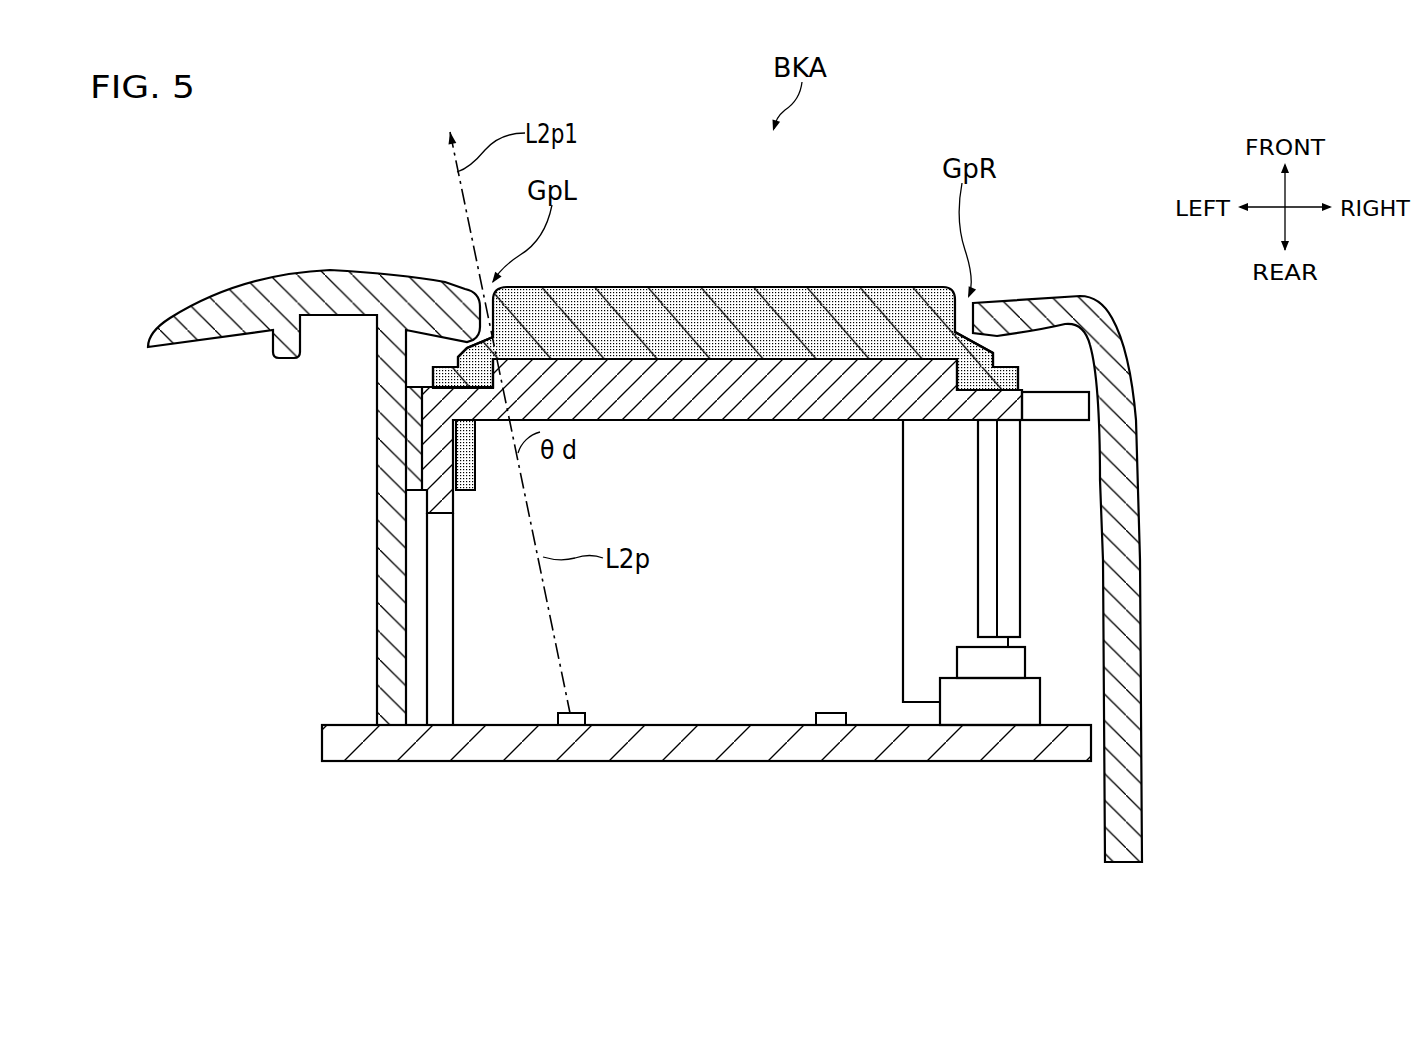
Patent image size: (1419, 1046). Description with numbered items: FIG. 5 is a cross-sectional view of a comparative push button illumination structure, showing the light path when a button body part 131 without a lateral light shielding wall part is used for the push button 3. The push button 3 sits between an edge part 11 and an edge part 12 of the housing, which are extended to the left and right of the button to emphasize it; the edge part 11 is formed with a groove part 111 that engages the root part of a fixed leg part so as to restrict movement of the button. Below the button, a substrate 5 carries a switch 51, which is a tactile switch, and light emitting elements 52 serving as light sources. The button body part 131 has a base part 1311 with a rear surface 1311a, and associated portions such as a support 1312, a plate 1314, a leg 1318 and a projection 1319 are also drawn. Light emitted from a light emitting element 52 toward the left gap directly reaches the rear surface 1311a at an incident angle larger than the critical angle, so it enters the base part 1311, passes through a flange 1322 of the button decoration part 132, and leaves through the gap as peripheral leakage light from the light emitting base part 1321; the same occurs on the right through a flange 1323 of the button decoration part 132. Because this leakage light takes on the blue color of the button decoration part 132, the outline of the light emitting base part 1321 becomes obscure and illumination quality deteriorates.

The push button 3 is at (728, 429).
The substrate 5 is at (720, 762).
The edge part 11 is at (392, 277).
The edge part 12 is at (1032, 299).
The switch 51 is at (1025, 655).
The light emitting element 52 is at (573, 712).
The groove part 111 is at (432, 440).
The button body part 131 is at (722, 542).
The button decoration part 132 is at (728, 294).
The base part 1311 is at (716, 421).
The rear surface 1311a is at (800, 421).
The right support post 1312 is at (1023, 553).
The support plate 1314 is at (902, 567).
The left leg plate 1318 is at (455, 600).
The projection 1319 is at (458, 472).
The light emitting base part 1321 is at (658, 287).
The flange 1322 is at (469, 338).
The flange 1323 is at (976, 343).